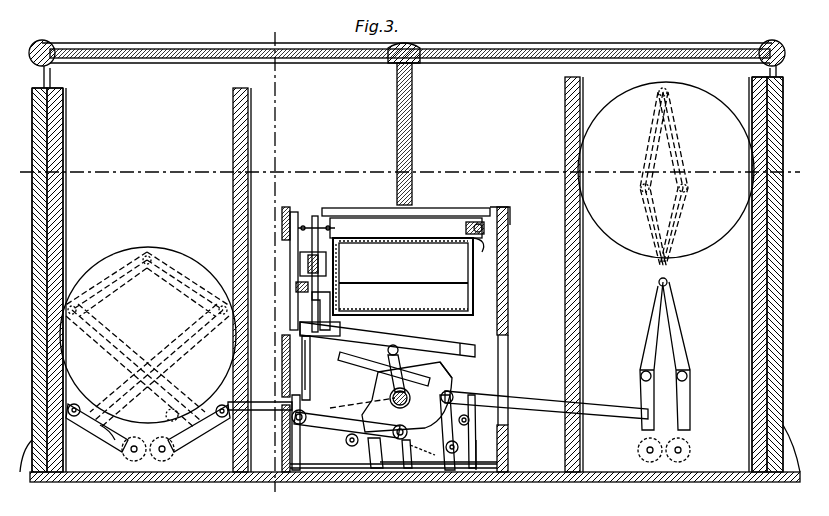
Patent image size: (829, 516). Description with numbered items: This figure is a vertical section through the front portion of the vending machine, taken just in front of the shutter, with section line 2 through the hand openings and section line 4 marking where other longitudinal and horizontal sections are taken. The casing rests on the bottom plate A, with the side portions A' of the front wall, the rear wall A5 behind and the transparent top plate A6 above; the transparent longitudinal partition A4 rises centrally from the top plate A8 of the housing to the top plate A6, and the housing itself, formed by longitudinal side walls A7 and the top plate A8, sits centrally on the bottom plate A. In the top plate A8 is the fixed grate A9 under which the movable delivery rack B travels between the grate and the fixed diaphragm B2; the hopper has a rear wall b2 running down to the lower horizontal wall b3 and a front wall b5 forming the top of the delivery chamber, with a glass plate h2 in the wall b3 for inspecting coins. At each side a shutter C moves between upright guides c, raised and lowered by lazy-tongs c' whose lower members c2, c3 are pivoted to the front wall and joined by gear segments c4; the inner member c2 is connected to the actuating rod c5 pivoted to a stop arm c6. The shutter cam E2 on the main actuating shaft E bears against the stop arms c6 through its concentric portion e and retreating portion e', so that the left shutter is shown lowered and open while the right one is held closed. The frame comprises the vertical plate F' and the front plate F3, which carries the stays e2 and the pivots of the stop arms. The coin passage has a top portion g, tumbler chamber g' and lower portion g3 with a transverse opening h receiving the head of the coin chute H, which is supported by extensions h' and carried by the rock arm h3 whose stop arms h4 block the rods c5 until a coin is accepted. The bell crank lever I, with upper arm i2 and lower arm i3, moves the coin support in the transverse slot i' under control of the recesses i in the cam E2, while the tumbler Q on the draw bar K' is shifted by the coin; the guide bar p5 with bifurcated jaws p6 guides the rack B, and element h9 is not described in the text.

The section line 2— 2 is at (406, 172).
The section line 4— 4 is at (273, 263).
The bottom plate A is at (410, 286).
The longitudinal partition A4 is at (412, 120).
The rear wall A5 is at (405, 135).
The top plate of casing A6 is at (516, 48).
The longitudinal side walls of housing A7 is at (516, 339).
The top plate of housing A8 is at (500, 210).
The fixed grate A9 is at (352, 208).
The side portions of front wall A' is at (269, 339).
The movable delivery rack B is at (420, 232).
The fixed diaphragm B2 is at (403, 262).
The rear wall of hopper b2 is at (403, 295).
The lower horizontal wall b3 is at (448, 312).
The front wall of hopper b5 is at (364, 238).
The shutter C is at (407, 255).
The lazy-tongs c' is at (552, 371).
The upright guides c is at (407, 313).
The inner lower member of lazy-tongs c2 is at (180, 428).
The outer lower member of lazy-tongs c3 is at (112, 428).
The gear segments c4 is at (148, 462).
The actuating rod c5 is at (266, 400).
The stop arm c6 is at (365, 470).
The main actuating shaft E is at (407, 397).
The shutter cam E2 is at (440, 376).
The concentric portion of cam e is at (464, 421).
The stays e2 is at (480, 420).
The retreating portion of cam e' is at (349, 408).
The vertical plate F' is at (438, 484).
The front plate F3 is at (486, 454).
The top portion of coin passage g is at (316, 253).
The tumbler chamber g' is at (353, 277).
The lower portion of coin passage g3 is at (298, 412).
The coin chute H is at (450, 344).
The transverse opening h is at (293, 311).
The extensions h' is at (298, 325).
The glass plate h2 is at (403, 296).
The rock arm h3 is at (385, 368).
The stop arms of rock arm h4 is at (402, 373).
The link h9 is at (370, 412).
The bell crank lever I is at (306, 470).
The recessed portions of cam i is at (404, 473).
The transverse slot i' is at (282, 280).
The upwardly extending arm of lever i2 is at (302, 352).
The lower arm of lever i3 is at (378, 468).
The draw bar K' is at (291, 259).
The guide bar p5 is at (500, 230).
The bifurcated jaws p6 is at (470, 222).
The tumbler Q is at (300, 250).